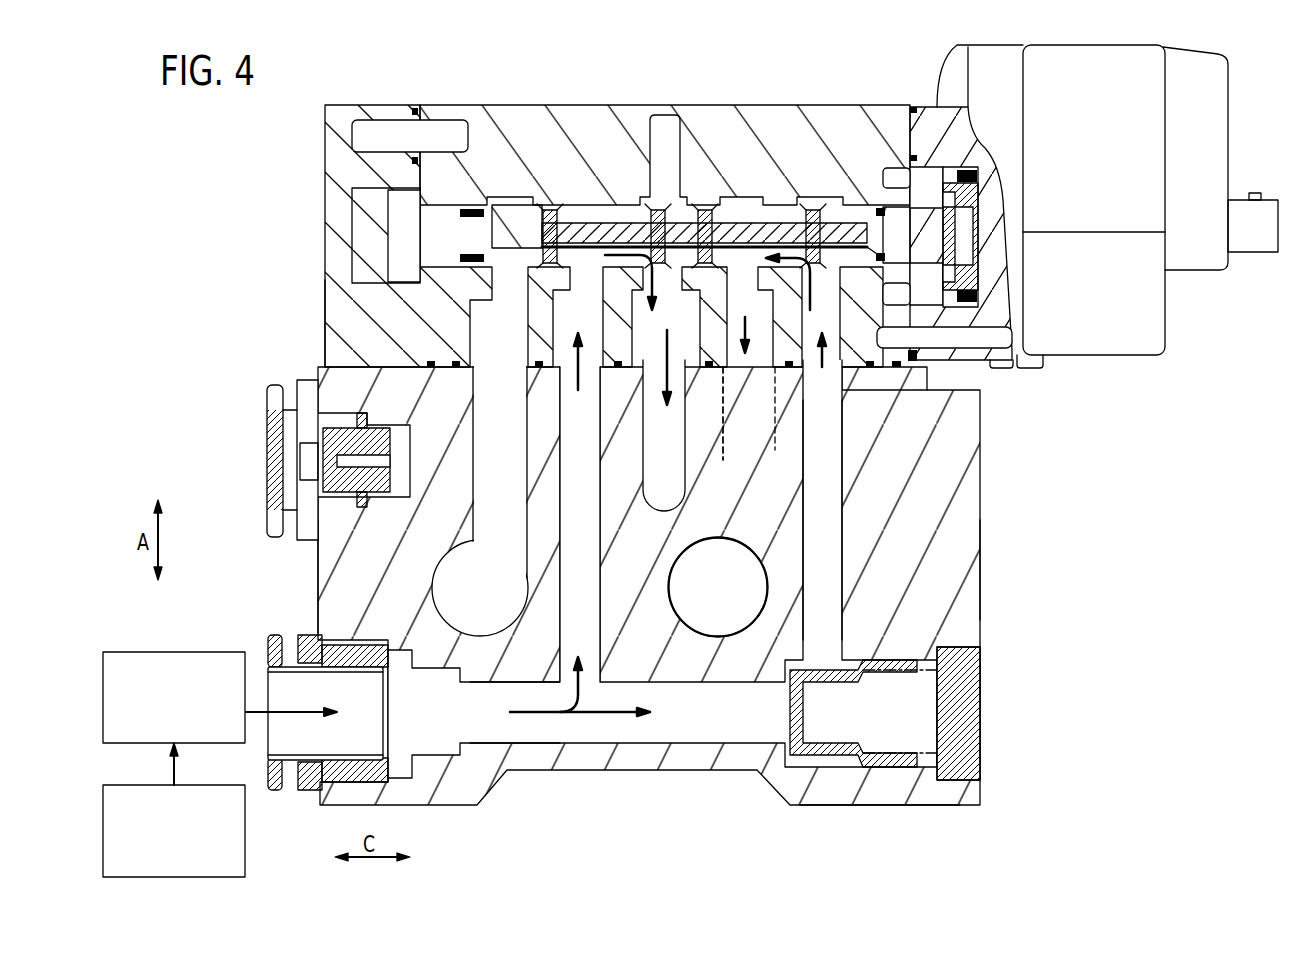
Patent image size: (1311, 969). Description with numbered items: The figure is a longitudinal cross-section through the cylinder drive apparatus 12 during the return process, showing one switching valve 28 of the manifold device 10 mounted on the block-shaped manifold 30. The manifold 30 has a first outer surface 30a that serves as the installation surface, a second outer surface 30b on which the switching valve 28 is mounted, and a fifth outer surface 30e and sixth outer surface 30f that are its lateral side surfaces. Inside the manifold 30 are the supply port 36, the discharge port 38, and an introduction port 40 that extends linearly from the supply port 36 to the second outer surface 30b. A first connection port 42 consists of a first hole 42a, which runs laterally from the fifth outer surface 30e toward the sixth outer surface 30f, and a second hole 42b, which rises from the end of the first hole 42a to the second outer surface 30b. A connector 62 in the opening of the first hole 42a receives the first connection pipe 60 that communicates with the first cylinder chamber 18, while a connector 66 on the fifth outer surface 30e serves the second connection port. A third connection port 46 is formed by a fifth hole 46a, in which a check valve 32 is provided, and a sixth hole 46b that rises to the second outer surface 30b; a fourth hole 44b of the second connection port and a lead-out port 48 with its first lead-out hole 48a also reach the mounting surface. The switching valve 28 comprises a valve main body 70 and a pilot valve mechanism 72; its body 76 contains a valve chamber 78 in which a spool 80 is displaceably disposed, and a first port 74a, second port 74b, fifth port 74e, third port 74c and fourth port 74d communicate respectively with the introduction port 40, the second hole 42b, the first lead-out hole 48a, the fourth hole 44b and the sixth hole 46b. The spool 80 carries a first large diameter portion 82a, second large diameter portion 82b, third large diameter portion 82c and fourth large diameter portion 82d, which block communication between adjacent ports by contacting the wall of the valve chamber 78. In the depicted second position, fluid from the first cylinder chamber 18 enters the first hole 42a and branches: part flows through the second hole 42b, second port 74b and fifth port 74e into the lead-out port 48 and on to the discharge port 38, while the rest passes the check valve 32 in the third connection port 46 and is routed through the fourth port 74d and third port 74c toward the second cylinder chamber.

The manifold device 10 is at (236, 386).
The cylinder drive apparatus 12 is at (266, 148).
The first cylinder chamber 18 is at (125, 785).
The switching valve 28 is at (1098, 443).
The manifold 30 is at (968, 510).
The first outer surface 30a is at (877, 805).
The second outer surface 30b is at (330, 330).
The fifth outer surface 30e is at (318, 575).
The sixth outer surface 30f is at (980, 568).
The check valve 32 is at (955, 720).
The supply port 36 is at (457, 563).
The discharge port 38 is at (708, 608).
The introduction port 40 is at (502, 445).
The first connection port 42 is at (587, 818).
The first hole 42a is at (527, 723).
The second hole 42b is at (570, 640).
The fourth hole 44b is at (776, 452).
The third connection port 46 is at (770, 818).
The fifth hole 46a is at (712, 718).
The sixth hole 46b is at (803, 632).
The lead-out port 48 is at (718, 587).
The first lead-out hole 48a is at (662, 482).
The first connection pipe 60 is at (153, 652).
The connector 62 is at (267, 643).
The connector 66 is at (268, 480).
The valve main body 70 is at (995, 378).
The pilot valve mechanism 72 is at (1083, 370).
The first port 74a is at (483, 367).
The second port 74b is at (598, 372).
The third port 74c is at (760, 352).
The fourth port 74d is at (843, 373).
The fifth port 74e is at (698, 370).
The body 76 is at (768, 117).
The valve chamber 78 is at (850, 217).
The spool 80 is at (597, 233).
The first large diameter portion 82a is at (550, 210).
The second large diameter portion 82b is at (658, 210).
The third large diameter portion 82c is at (707, 210).
The fourth large diameter portion 82d is at (813, 205).